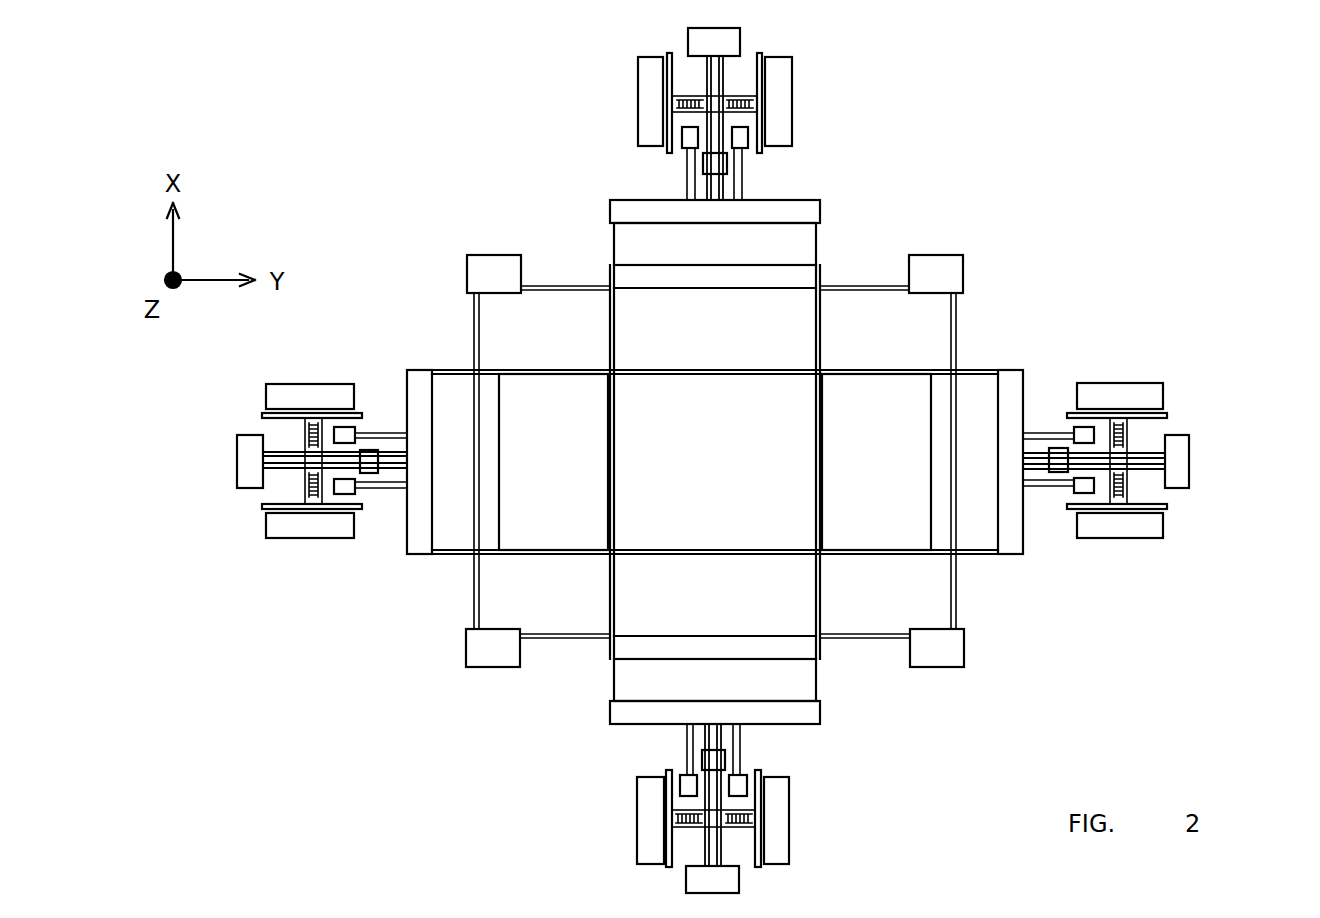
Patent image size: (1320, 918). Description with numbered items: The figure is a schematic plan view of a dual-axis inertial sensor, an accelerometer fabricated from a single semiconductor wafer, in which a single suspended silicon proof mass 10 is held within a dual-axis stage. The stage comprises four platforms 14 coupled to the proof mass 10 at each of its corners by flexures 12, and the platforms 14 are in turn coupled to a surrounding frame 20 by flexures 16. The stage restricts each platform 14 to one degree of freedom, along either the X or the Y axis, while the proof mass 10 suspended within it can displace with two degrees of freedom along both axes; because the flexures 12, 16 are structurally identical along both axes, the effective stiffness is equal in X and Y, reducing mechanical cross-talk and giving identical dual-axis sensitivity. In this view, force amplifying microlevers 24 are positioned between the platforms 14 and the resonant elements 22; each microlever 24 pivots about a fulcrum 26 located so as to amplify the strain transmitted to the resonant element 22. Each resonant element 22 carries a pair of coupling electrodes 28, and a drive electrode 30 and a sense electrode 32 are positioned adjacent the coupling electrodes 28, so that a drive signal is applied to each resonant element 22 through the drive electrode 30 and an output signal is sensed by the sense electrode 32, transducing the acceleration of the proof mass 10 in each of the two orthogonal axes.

The proof mass 10 is at (775, 488).
The flexures 12 is at (610, 328).
The platforms 14 is at (721, 285).
The flexures 16 is at (563, 285).
The frame 20 is at (495, 267).
The resonant elements 22 is at (280, 487).
The microlevers 24 is at (1013, 378).
The fulcrums 26 is at (1024, 433).
The coupling electrodes 28 is at (760, 830).
The drive electrode 30 is at (650, 97).
The sense electrode 32 is at (778, 97).